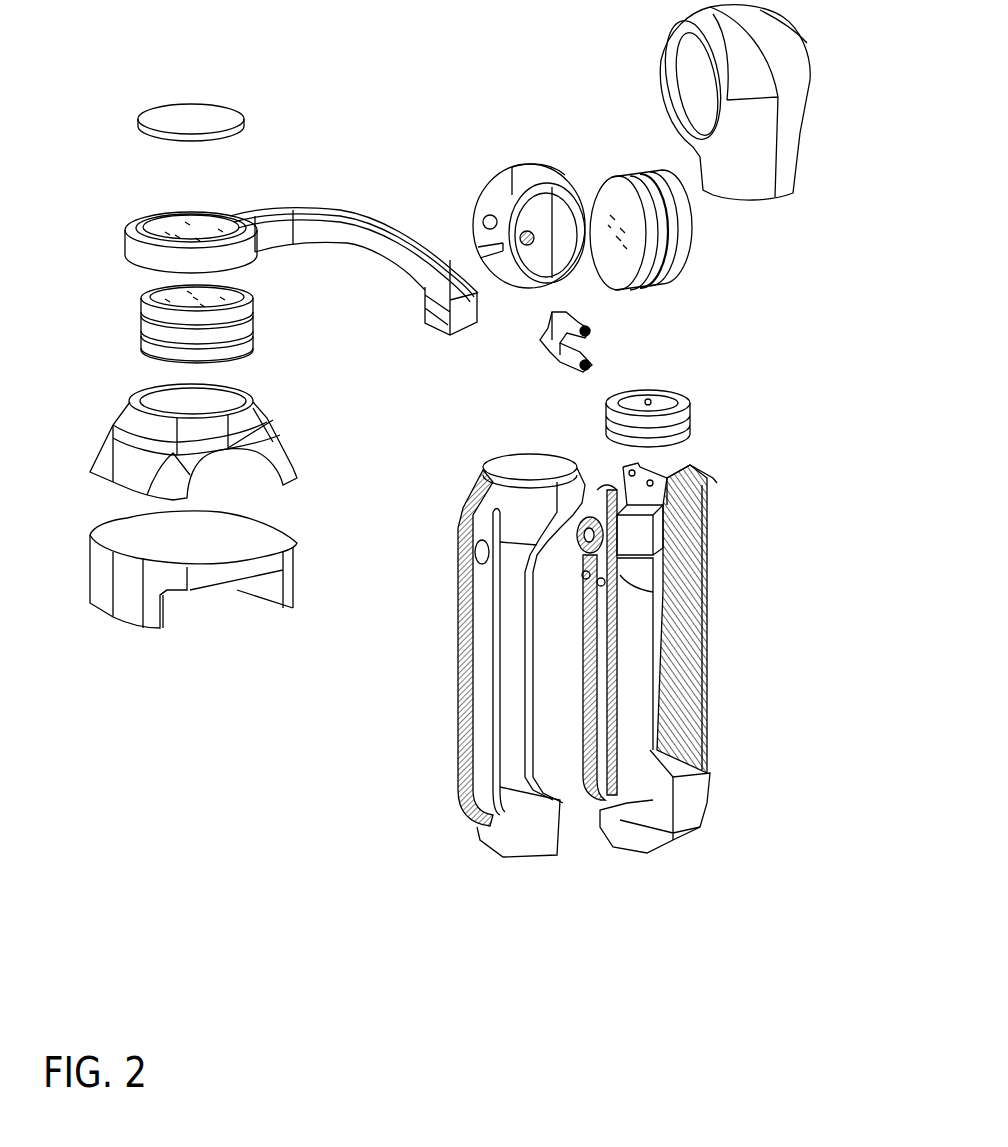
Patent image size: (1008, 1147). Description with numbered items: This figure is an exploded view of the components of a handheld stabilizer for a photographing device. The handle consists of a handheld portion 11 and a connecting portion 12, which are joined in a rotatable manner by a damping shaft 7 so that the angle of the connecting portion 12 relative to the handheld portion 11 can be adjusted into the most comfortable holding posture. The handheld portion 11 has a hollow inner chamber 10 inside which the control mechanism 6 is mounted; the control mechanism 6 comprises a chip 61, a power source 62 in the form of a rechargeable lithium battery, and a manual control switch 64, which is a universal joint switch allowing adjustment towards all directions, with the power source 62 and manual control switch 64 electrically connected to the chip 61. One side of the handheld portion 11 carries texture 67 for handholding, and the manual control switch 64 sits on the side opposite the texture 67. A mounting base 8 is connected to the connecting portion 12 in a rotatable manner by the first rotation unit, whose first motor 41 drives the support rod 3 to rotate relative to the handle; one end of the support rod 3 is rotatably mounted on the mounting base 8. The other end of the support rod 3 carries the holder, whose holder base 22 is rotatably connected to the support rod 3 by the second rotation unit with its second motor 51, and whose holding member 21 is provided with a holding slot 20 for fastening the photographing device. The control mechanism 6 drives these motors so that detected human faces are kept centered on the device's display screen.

The support rod 3 is at (313, 230).
The control mechanism 6 is at (602, 528).
The damping shaft 7 is at (690, 410).
The mounting base 8 is at (547, 168).
The hollow inner chamber 10 is at (707, 475).
The handheld portion 11 is at (520, 817).
The connecting portion 12 is at (760, 152).
The holding slot 20 is at (187, 605).
The holding member 21 is at (128, 590).
The holder base 22 is at (247, 445).
The first motor 41 is at (633, 173).
The second motor 51 is at (142, 319).
The chip 61 is at (680, 523).
The power source 62 is at (705, 700).
The manual control switch 64 is at (587, 523).
The texture 67 is at (702, 633).